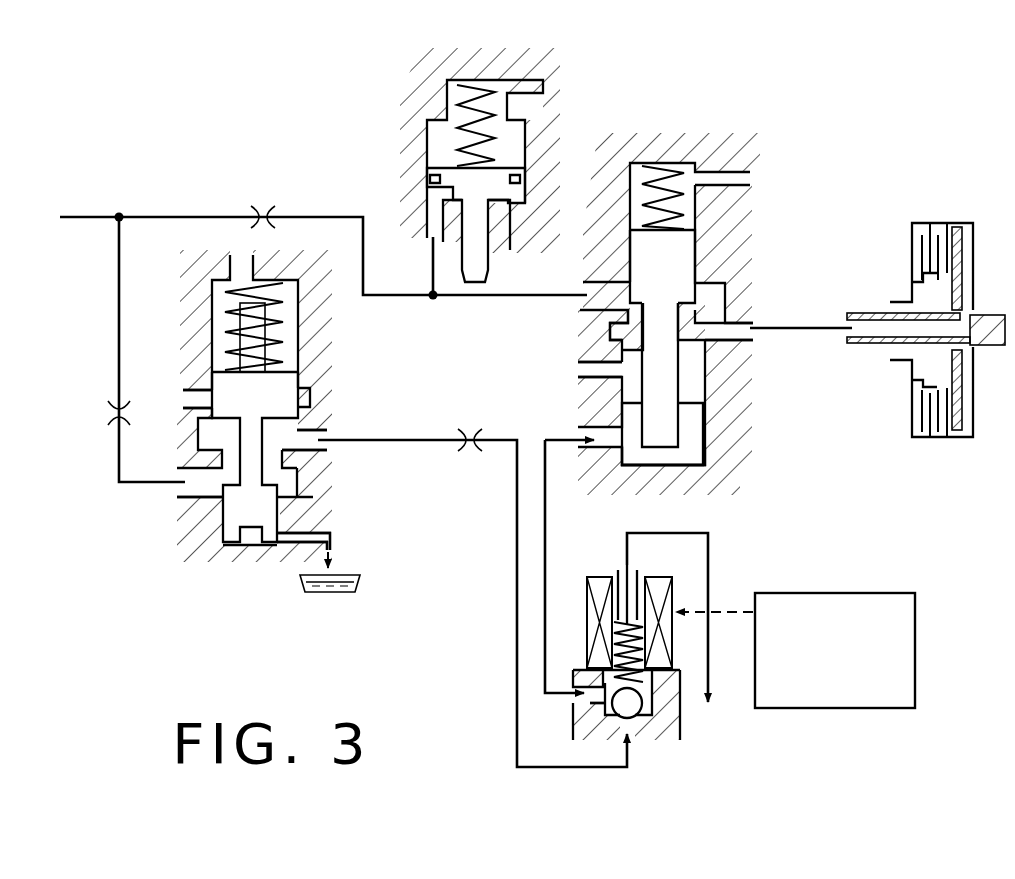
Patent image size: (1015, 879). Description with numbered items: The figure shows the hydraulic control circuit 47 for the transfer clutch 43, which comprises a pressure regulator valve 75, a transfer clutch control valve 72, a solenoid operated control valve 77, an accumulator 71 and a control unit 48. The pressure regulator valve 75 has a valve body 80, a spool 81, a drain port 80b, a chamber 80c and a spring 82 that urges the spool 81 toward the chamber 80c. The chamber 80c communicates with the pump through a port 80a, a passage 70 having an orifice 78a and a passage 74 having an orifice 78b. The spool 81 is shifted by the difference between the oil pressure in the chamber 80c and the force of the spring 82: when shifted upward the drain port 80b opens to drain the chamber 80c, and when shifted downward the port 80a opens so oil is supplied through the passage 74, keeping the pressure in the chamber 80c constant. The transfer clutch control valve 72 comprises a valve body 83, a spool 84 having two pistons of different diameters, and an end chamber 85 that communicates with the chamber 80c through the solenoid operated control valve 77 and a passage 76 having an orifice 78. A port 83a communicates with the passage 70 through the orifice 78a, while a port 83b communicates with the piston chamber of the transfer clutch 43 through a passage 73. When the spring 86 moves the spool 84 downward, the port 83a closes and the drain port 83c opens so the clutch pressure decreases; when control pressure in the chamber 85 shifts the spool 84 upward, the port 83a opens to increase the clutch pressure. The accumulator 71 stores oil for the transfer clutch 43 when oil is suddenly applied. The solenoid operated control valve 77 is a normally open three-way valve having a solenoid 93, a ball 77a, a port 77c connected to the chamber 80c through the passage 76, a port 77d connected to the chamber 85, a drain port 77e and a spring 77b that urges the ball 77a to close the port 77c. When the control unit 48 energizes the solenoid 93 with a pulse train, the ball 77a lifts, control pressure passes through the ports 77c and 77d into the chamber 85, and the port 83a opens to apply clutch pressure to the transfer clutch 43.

The passage 70 is at (118, 184).
The orifice 78a is at (265, 212).
The passage 74 is at (117, 362).
The orifice 78b is at (117, 420).
The valve body 80 is at (306, 338).
The spring 82 is at (272, 300).
The spool 81 is at (276, 409).
The pressure regulator valve 75 is at (318, 377).
The drain port 80b is at (190, 398).
The chamber 80c is at (297, 441).
The port 80a is at (204, 497).
The passage 76 is at (436, 441).
The orifice 78 is at (471, 448).
The accumulator 71 is at (427, 150).
The control circuit 47 is at (607, 140).
The transfer clutch control valve 72 is at (739, 221).
The spring 86 is at (648, 186).
The spool 84 is at (645, 256).
The valve body 83 is at (705, 246).
The port 83a is at (610, 320).
The port 83b is at (735, 323).
The drain port 83c is at (600, 372).
The end chamber 85 is at (690, 452).
The passage 73 is at (782, 330).
The transfer clutch 43 is at (974, 290).
The solenoid operated control valve 77 is at (640, 665).
The ball 77a is at (652, 695).
The spring 77b is at (620, 628).
The port 77c is at (646, 722).
The port 77d is at (600, 702).
The drain port 77e is at (636, 572).
The solenoid 93 is at (598, 655).
The control unit 48 is at (915, 670).